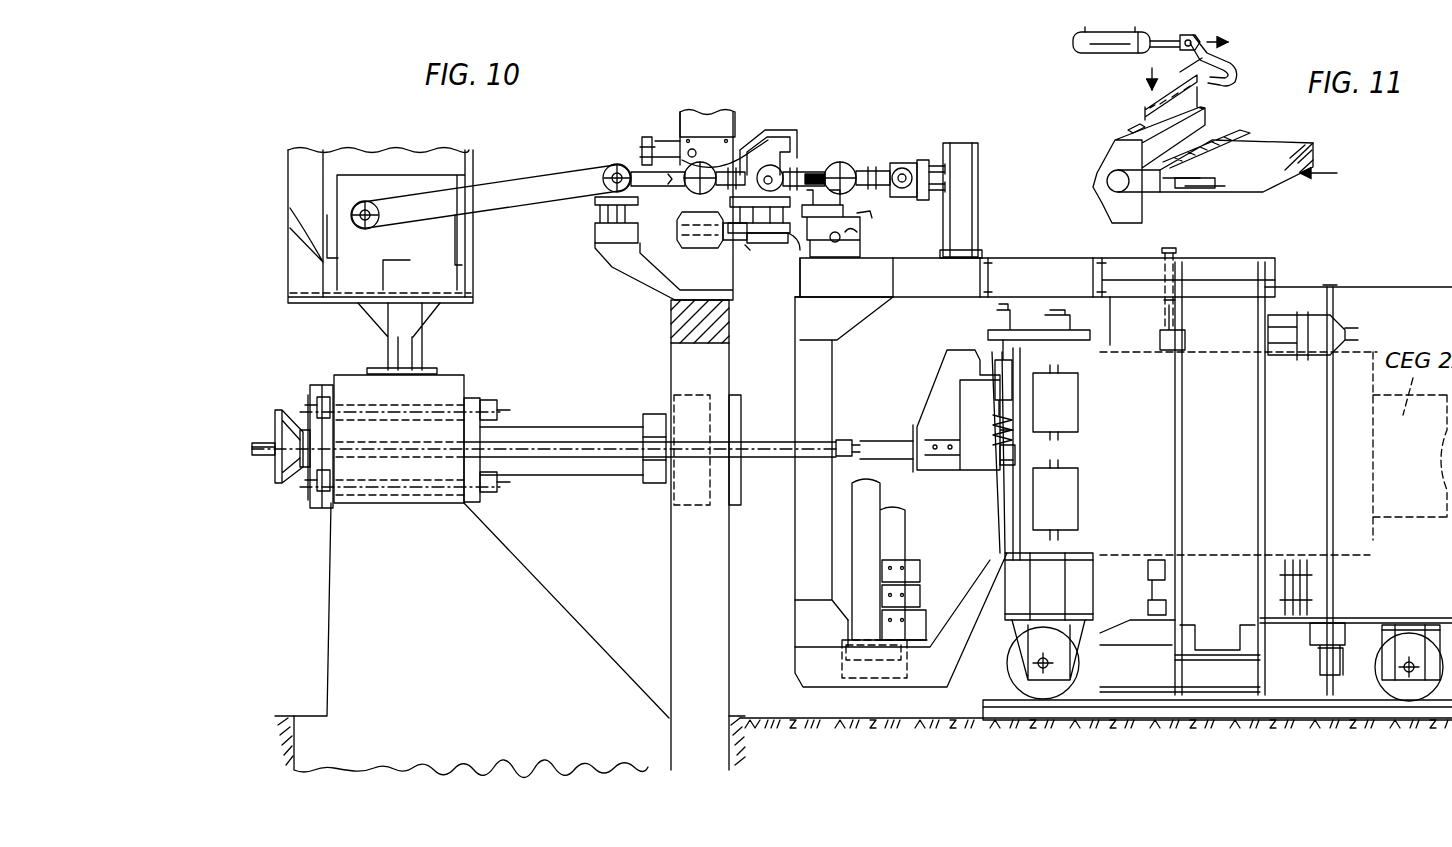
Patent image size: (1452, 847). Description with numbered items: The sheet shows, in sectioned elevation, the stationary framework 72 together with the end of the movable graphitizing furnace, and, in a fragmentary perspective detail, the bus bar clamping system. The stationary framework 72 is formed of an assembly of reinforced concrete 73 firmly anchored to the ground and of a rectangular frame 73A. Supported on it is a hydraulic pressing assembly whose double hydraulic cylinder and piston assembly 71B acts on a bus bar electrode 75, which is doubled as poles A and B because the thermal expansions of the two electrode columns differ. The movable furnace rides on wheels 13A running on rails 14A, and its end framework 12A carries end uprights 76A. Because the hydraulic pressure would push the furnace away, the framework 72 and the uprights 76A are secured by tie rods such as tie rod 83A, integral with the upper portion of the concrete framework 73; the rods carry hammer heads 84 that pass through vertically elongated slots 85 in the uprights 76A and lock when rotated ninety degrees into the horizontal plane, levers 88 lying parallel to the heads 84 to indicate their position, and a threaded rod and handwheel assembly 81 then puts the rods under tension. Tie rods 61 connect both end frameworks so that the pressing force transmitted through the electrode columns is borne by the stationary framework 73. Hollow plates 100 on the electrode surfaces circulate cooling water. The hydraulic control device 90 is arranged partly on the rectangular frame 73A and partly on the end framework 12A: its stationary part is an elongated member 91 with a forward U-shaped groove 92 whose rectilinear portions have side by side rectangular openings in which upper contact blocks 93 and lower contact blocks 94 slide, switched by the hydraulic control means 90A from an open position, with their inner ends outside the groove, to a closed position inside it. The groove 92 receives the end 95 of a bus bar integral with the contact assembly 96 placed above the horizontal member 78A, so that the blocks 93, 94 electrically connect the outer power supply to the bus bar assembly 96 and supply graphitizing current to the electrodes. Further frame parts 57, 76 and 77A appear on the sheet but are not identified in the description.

In FIG. 10, the hydraulic control means 90A is at (602, 158).
In FIG. 11, the hydraulic control means 90A is at (1104, 44).
In FIG. 10, the upper contact block 93 is at (766, 150).
In FIG. 11, the upper contact block 93 is at (1130, 130).
In FIG. 10, the contact bar 95 is at (795, 165).
In FIG. 11, the contact bar 95 is at (1232, 142).
In FIG. 10, the contact assembly 96 is at (874, 160).
In FIG. 10, the support column 57 is at (960, 155).
In FIG. 10, the end framework 12A is at (1013, 250).
In FIG. 11, the hydraulic control device 90 is at (1250, 58).
In FIG. 10, the tie rod 61 is at (1348, 322).
In FIG. 10, the bus bar electrode 75 is at (1358, 378).
In FIG. 10, the horizontal member 78A is at (1063, 283).
In FIG. 10, the end upright 76A is at (822, 358).
In FIG. 10, the vertically elongated slot 85 is at (822, 427).
In FIG. 10, the hammer head 84 is at (845, 443).
In FIG. 10, the hollow plate 100 is at (1062, 397).
In FIG. 10, the vertical frame member 77A is at (1242, 444).
In FIG. 10, the threaded rod and handwheel assembly 81 is at (278, 410).
In FIG. 10, the double hydraulic cylinder and piston assembly 71B is at (541, 427).
In FIG. 10, the tie rod 83A is at (612, 442).
In FIG. 10, the lever 88 is at (265, 470).
In FIG. 10, the stationary framework 72 is at (320, 588).
In FIG. 10, the reinforced concrete assembly 73 is at (501, 578).
In FIG. 10, the rectangular frame 73A is at (680, 598).
In FIG. 10, the carriage frame 76 is at (803, 556).
In FIG. 10, the wheel 13A is at (1043, 700).
In FIG. 10, the rail 14A is at (1207, 712).
In FIG. 11, the U-shaped groove 92 is at (1110, 178).
In FIG. 11, the elongated member 91 is at (1112, 208).
In FIG. 11, the lower contact block 94 is at (1190, 192).